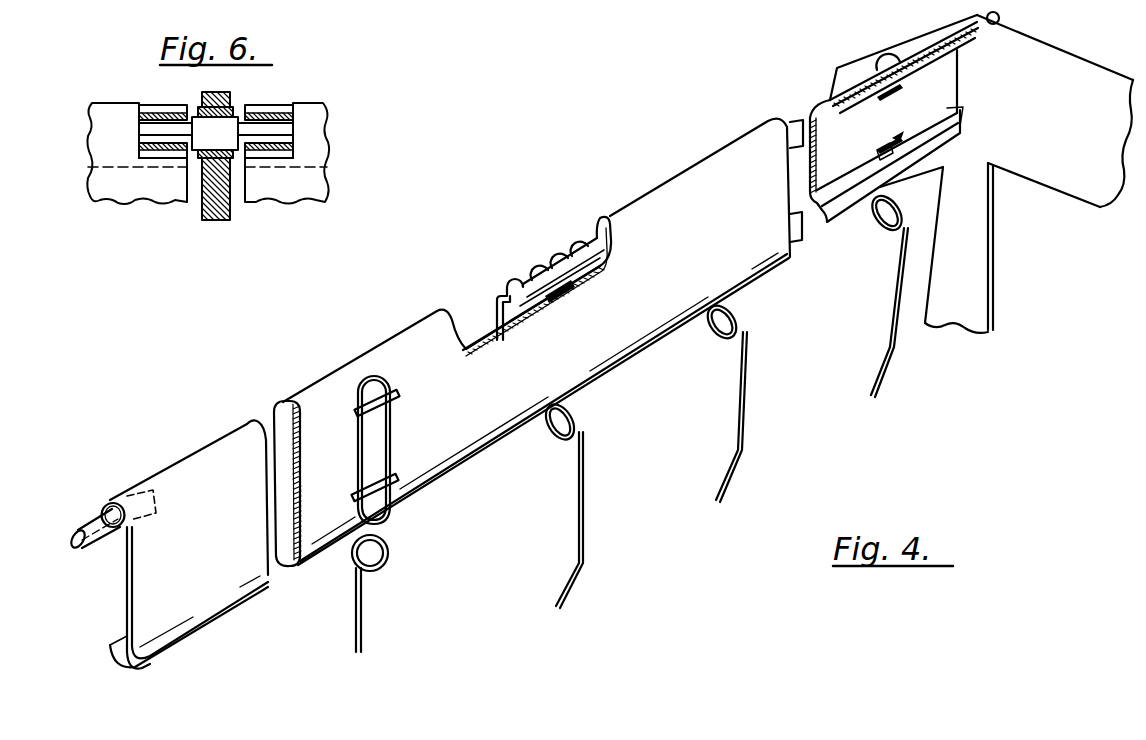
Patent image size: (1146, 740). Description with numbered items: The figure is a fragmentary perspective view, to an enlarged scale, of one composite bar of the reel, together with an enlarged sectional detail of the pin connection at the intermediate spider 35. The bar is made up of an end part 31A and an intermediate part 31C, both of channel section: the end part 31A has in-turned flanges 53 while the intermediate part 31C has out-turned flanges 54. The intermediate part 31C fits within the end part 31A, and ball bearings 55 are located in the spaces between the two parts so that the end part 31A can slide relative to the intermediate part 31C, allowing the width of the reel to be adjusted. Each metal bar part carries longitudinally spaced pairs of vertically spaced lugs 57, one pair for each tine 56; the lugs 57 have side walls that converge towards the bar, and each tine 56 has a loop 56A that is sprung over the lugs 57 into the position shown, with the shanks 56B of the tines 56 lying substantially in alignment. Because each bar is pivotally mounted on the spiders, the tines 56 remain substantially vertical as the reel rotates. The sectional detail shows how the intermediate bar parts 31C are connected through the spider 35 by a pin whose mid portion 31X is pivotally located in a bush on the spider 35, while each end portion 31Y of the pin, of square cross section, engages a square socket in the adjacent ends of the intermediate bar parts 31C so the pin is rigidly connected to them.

In FIG. 4, the end part of composite bar 31A is at (693, 163).
In FIG. 6, the intermediate part of composite bar 31C is at (104, 112).
In FIG. 4, the intermediate part of composite bar 31C is at (948, 78).
In FIG. 6, the mid portion of pin 31X is at (200, 140).
In FIG. 6, the end portion of pin 31Y is at (152, 120).
In FIG. 6, the spider 35 is at (213, 95).
In FIG. 4, the spider 35 is at (1083, 72).
In FIG. 4, the in-turned flanges 53 is at (280, 543).
In FIG. 4, the out-turned flanges 54 is at (843, 107).
In FIG. 4, the ball bearings 55 is at (516, 277).
In FIG. 4, the tines 56 is at (582, 482).
In FIG. 4, the loop of tine 56A is at (392, 432).
In FIG. 4, the shanks of tines 56B is at (364, 590).
In FIG. 4, the lugs 57 is at (393, 395).